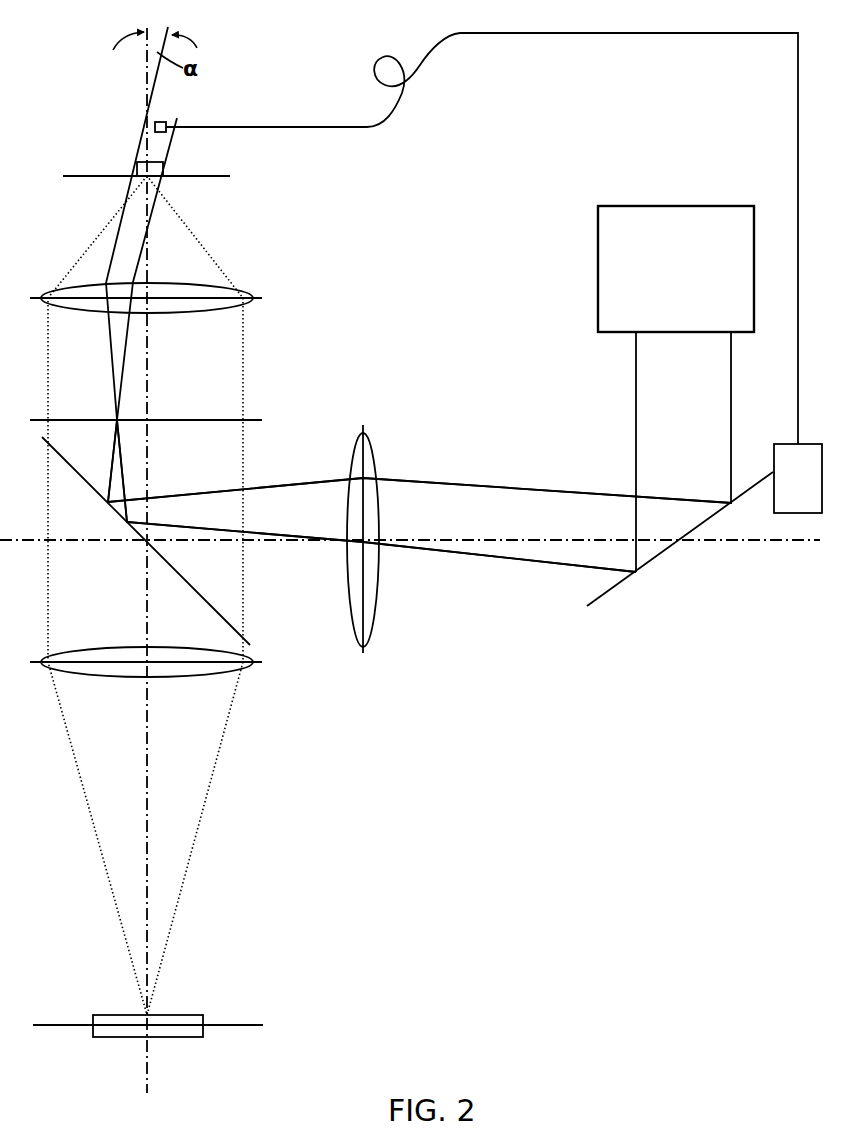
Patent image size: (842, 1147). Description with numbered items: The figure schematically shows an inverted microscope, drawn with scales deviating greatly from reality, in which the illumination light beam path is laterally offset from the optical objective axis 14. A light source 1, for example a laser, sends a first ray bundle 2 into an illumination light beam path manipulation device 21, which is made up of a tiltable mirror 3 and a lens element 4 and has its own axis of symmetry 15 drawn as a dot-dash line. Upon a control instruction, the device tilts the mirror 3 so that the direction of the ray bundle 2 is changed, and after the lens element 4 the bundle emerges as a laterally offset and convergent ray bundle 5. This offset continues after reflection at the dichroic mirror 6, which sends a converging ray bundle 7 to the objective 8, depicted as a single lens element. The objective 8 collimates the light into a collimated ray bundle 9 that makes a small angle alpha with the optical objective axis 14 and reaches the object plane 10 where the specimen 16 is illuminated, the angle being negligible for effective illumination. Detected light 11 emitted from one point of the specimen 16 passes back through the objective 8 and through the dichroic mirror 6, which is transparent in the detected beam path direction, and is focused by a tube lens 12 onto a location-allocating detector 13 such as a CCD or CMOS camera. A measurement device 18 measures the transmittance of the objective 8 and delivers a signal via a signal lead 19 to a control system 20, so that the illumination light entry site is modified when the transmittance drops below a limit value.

The light source 1 is at (598, 268).
The first ray bundle 2 is at (411, 532).
The tiltable mirror 3 is at (610, 590).
The lens element 4 is at (373, 455).
The ray bundle 5 is at (312, 497).
The dichroic mirror 6 is at (233, 627).
The converging ray bundle 7 is at (115, 477).
The objective 8 is at (245, 292).
The collimated ray bundle 9 is at (120, 263).
The focal plane 10 is at (210, 176).
The detected light 11 is at (103, 245).
The tube lens 12 is at (232, 673).
The detector 13 is at (178, 1015).
The optical objective axis 14 is at (148, 793).
The axis of symmetry 15 is at (755, 543).
The specimen 16 is at (137, 162).
The measurement device 18 is at (166, 125).
The signal lead 19 is at (617, 34).
The control system 20 is at (785, 444).
The illumination light beam path manipulation device 21 is at (516, 585).